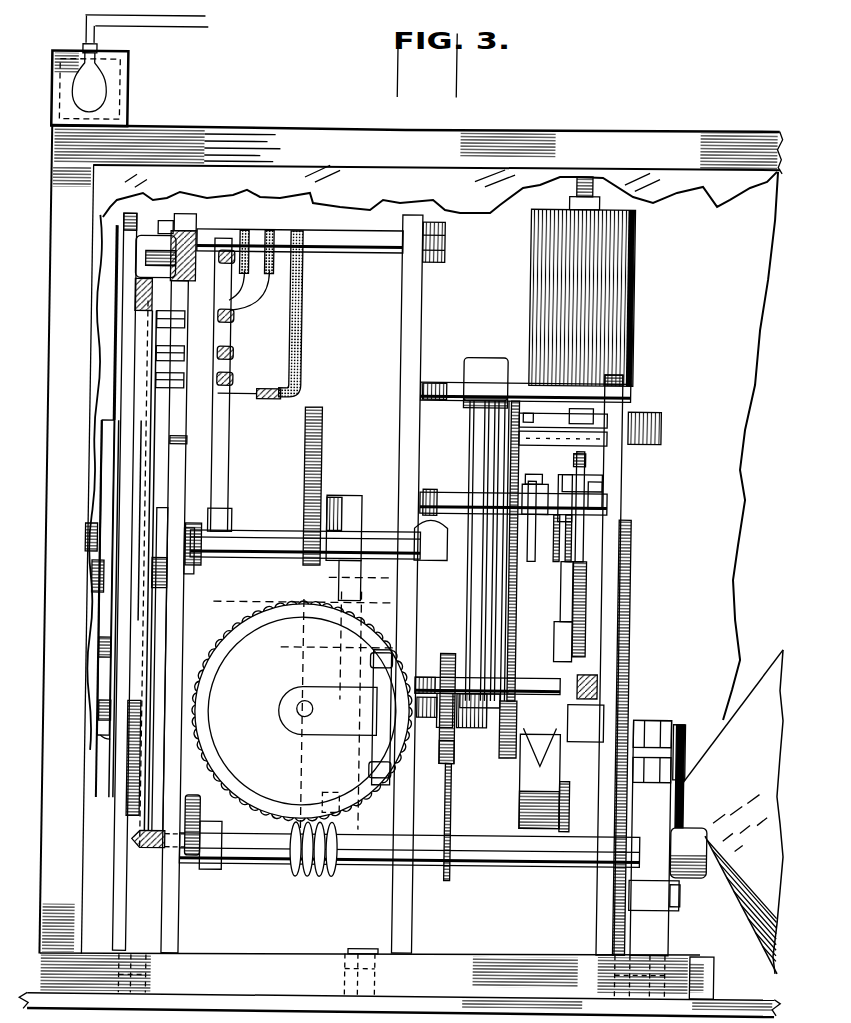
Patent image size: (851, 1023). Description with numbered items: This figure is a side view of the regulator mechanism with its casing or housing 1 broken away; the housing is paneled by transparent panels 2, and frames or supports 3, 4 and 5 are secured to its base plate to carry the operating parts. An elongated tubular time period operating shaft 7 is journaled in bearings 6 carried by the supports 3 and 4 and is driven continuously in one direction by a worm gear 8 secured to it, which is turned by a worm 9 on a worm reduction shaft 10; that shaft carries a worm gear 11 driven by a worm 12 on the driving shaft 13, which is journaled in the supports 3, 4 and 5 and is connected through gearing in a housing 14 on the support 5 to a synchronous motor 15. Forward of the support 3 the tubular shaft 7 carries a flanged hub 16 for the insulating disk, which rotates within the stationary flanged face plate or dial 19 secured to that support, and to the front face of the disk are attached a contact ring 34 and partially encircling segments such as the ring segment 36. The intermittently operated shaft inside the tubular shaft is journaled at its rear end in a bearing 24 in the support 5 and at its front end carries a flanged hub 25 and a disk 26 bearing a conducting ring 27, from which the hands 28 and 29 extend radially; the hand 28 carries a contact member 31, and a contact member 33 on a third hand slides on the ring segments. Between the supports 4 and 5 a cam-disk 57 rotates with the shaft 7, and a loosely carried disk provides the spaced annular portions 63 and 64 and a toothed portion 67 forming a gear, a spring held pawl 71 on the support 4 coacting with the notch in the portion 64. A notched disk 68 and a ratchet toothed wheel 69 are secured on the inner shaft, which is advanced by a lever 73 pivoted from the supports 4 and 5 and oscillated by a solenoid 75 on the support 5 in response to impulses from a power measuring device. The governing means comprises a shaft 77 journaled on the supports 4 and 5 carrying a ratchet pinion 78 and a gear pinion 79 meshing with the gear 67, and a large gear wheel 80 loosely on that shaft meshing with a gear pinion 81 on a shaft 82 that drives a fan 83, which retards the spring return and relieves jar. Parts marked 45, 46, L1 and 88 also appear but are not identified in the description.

The housing or casing 1 is at (193, 1000).
The transparent panels 2 is at (702, 196).
The frame or support 3 is at (186, 914).
The frame or support 4 is at (417, 935).
The frame or support 5 is at (607, 929).
The bearings 6 is at (168, 580).
The tubular time period operating shaft 7 is at (241, 542).
The worm gear 8 is at (321, 429).
The worm 9 is at (303, 702).
The worm reduction shaft 10 is at (293, 700).
The worm gear 11 is at (252, 782).
The worm 12 is at (326, 869).
The driving shaft 13 is at (551, 860).
The housing 14 is at (668, 838).
The synchronous motor 15 is at (733, 811).
The flanged hub 16 is at (157, 614).
The stationary flanged face plate or dial 19 is at (124, 867).
The bearing 24 is at (632, 531).
The flanged hub 25 is at (94, 578).
The plate or disk 26 is at (110, 468).
The electrical current conducting ring 27 is at (103, 650).
The hand 28 is at (108, 262).
The hand 29 is at (104, 693).
The contact member 31 is at (112, 337).
The contact member 33 is at (111, 380).
The contact ring 34 is at (117, 749).
The ring segment 36 is at (108, 401).
The shaft 45 is at (246, 234).
The arm 46 is at (252, 301).
The lever L1 is at (300, 326).
The cam-disk 57 is at (468, 418).
The annular portion 63 is at (496, 444).
The annular portion 64 is at (483, 430).
The annular toothed portion 67 is at (519, 461).
The notched disk 68 is at (582, 616).
The ratchet toothed wheel 69 is at (577, 621).
The spring held pawl 71 is at (481, 355).
The lever 73 is at (590, 489).
The solenoid 75 is at (629, 267).
The shaft 77 is at (476, 735).
The ratchet pinion 78 is at (459, 762).
The gear pinion 79 is at (509, 752).
The large gear wheel 80 is at (453, 823).
The gear pinion 81 is at (440, 677).
The shaft 82 is at (563, 667).
The fan 83 is at (562, 631).
The block 88 is at (526, 787).